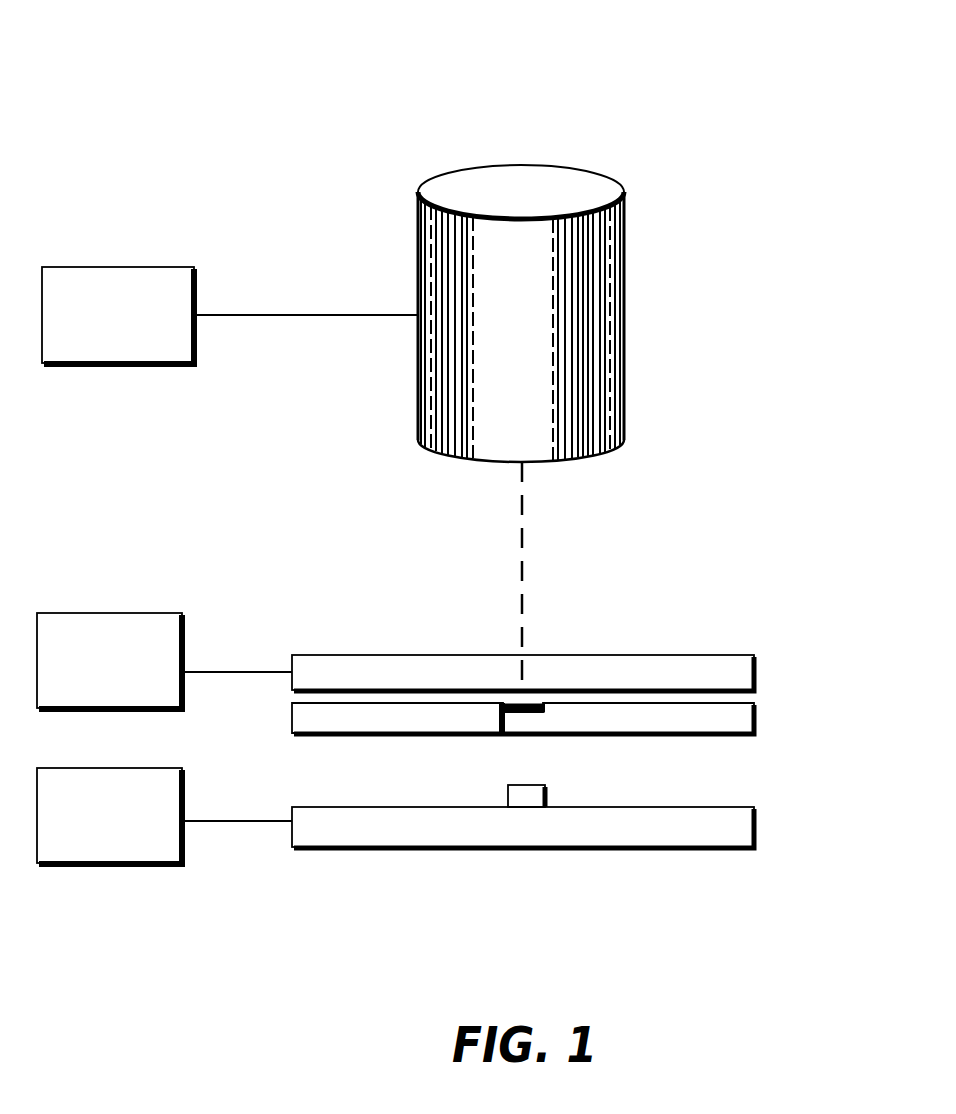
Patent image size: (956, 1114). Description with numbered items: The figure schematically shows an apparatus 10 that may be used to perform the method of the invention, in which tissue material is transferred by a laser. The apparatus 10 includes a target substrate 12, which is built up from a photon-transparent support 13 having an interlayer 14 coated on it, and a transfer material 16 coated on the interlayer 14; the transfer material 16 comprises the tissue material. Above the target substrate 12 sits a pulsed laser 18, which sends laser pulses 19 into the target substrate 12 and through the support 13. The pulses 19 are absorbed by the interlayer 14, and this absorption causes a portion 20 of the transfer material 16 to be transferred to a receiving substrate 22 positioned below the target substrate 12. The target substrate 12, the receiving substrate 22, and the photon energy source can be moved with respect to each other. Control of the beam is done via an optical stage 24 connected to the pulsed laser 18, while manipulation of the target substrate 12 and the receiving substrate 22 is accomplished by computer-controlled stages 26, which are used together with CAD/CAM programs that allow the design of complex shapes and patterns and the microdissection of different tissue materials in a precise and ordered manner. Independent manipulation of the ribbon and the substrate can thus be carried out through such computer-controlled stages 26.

The apparatus 10 is at (278, 115).
The target substrate 12 is at (583, 632).
The photon-transparent support 13 is at (752, 655).
The interlayer 14 is at (757, 693).
The transfer material 16 is at (757, 732).
The pulsed laser 18 is at (623, 290).
The laser pulses 19 is at (518, 573).
The portion of the transfer material 20 is at (507, 793).
The receiving substrate 22 is at (523, 849).
The optical stage 24 is at (115, 267).
The computer-controlled stages 26 is at (107, 613).